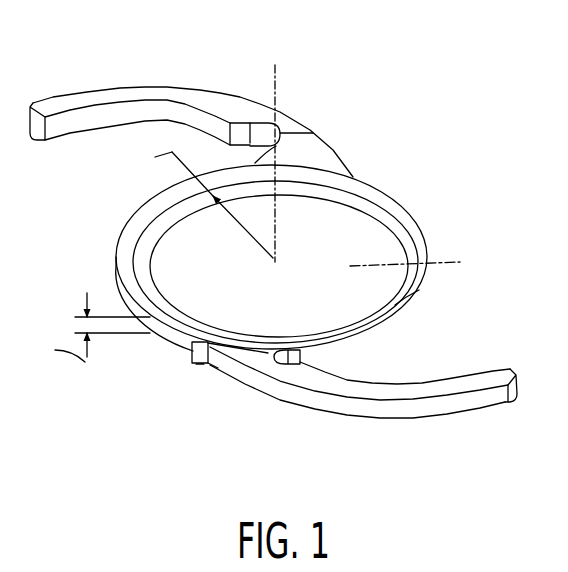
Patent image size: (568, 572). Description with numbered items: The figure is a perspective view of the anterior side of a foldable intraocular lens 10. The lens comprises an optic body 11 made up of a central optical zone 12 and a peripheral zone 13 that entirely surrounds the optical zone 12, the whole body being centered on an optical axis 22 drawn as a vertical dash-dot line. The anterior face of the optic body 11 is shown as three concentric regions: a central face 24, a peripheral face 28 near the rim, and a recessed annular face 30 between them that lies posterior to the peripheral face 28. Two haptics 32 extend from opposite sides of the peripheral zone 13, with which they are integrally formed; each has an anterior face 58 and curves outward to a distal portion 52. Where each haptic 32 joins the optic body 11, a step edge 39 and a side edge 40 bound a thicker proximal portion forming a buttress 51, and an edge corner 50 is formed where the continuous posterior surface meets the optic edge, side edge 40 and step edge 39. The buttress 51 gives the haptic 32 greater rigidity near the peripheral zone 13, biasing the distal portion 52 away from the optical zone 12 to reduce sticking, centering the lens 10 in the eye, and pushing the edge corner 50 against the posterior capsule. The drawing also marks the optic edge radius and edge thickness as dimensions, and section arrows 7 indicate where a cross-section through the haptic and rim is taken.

The intraocular lens 10 is at (472, 73).
The optic body 11 is at (108, 223).
The optical zone 12 is at (284, 302).
The peripheral zone 13 is at (433, 283).
The optical axis 22 is at (281, 84).
The central face 24 is at (391, 244).
The peripheral face 28 is at (363, 188).
The recessed annular face 30 is at (385, 222).
The haptic 32 is at (144, 68).
The step edge 39 is at (217, 368).
The side edge 40 is at (200, 355).
The edge corner 50 is at (406, 320).
The buttress 51 is at (201, 372).
The distal portion 52 is at (53, 77).
The anterior face 58 is at (180, 100).
The section line 7- 7 is at (350, 264).